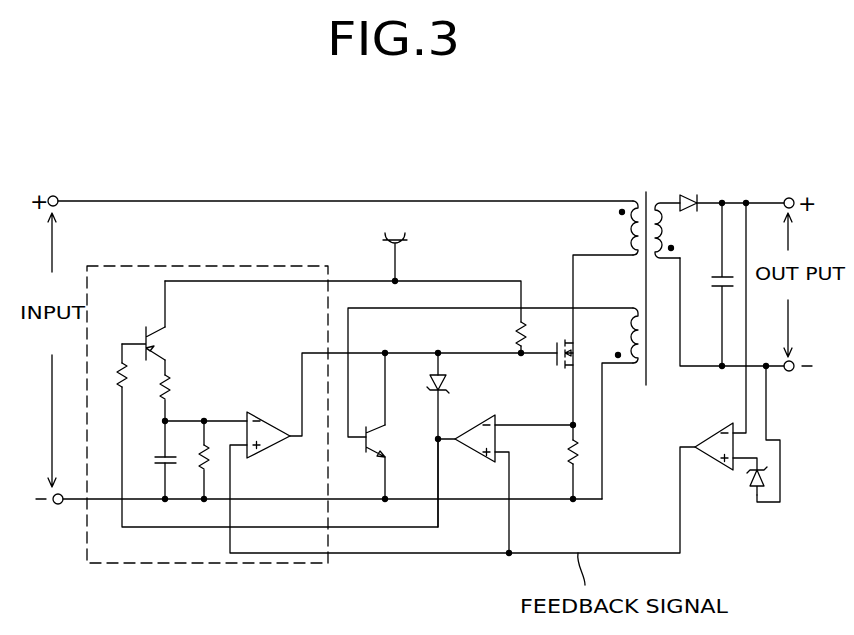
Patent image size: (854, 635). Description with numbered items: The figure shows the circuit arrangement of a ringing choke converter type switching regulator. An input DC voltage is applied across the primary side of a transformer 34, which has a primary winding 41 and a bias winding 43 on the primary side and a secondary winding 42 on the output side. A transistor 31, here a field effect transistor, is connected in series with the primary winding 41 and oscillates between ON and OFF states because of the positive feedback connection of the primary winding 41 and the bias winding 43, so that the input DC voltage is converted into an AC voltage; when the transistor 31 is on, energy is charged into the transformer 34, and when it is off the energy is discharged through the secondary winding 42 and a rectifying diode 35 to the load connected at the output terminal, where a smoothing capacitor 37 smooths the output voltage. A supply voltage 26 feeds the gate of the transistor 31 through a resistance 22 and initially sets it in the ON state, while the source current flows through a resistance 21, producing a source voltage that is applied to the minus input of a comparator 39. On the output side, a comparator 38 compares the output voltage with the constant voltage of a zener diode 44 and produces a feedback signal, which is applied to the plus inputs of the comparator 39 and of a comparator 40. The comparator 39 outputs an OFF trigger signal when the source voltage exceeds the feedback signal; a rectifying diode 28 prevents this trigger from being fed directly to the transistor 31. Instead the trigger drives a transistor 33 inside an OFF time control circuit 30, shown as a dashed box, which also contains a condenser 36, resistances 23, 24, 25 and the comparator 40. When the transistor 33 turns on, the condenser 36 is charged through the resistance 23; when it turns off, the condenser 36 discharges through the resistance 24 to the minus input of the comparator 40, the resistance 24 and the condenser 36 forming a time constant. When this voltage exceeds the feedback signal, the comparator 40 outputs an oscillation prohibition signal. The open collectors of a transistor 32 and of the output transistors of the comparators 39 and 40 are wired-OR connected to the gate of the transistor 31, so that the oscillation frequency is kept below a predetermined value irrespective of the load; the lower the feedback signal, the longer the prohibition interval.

The resistance 21 is at (568, 462).
The resistance 22 is at (527, 320).
The resistance 23 is at (172, 385).
The resistance 24 is at (212, 470).
The resistance 25 is at (120, 374).
The supply voltage 26 is at (385, 236).
The rectifying diode 28 is at (446, 383).
The OFF time control circuit 30 is at (300, 565).
The transistor 31 is at (576, 349).
The transistor 32 is at (378, 445).
The transistor 33 is at (150, 335).
The transformer 34 is at (645, 195).
The rectifying diode 35 is at (688, 198).
The condenser 36 is at (158, 456).
The smoothing capacitor 37 is at (718, 290).
The comparator 38 is at (718, 462).
The comparator 39 is at (488, 416).
The comparator 40 is at (268, 418).
The primary winding 41 is at (611, 228).
The secondary winding 42 is at (681, 230).
The bias winding 43 is at (620, 322).
The zener diode 44 is at (756, 495).